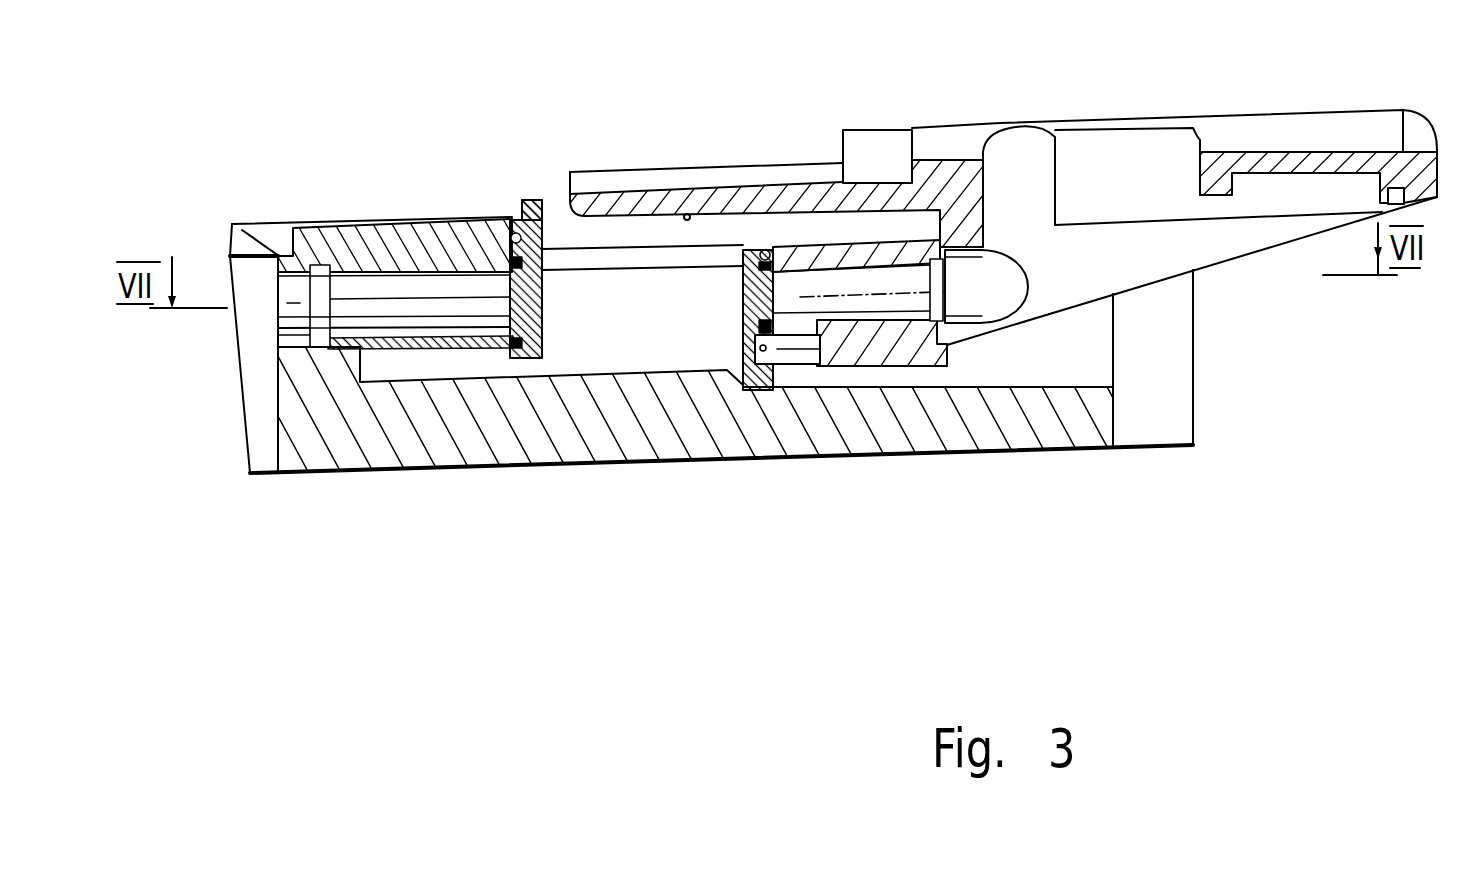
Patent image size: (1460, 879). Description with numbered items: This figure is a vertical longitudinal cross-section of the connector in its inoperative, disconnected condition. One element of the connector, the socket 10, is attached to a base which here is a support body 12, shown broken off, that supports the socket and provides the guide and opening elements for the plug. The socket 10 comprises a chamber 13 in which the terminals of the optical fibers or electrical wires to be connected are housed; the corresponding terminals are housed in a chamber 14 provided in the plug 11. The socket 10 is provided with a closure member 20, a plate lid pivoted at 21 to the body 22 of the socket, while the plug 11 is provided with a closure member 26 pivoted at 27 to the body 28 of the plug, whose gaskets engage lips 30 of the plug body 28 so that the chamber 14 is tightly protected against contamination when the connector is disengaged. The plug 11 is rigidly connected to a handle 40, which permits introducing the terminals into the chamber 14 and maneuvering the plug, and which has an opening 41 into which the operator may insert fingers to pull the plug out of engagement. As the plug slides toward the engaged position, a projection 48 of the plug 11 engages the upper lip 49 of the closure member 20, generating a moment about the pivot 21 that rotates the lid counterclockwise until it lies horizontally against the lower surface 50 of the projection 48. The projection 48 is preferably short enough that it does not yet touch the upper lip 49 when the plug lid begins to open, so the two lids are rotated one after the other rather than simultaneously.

The socket 10 is at (430, 217).
The plug 11 is at (868, 250).
The support body 12 is at (697, 474).
The chamber 13 is at (408, 298).
The chamber 14 is at (937, 367).
The closure member 20 is at (542, 320).
The pivot 21 is at (510, 224).
The body 22 is at (370, 222).
The closure member 26 is at (766, 256).
The pivot 27 is at (767, 363).
The body 28 is at (893, 303).
The lips 30 is at (815, 345).
The handle 40 is at (1291, 150).
The opening 41 is at (1128, 173).
The projection 48 is at (605, 197).
The upper lip 49 is at (533, 205).
The lower surface 50 is at (708, 200).